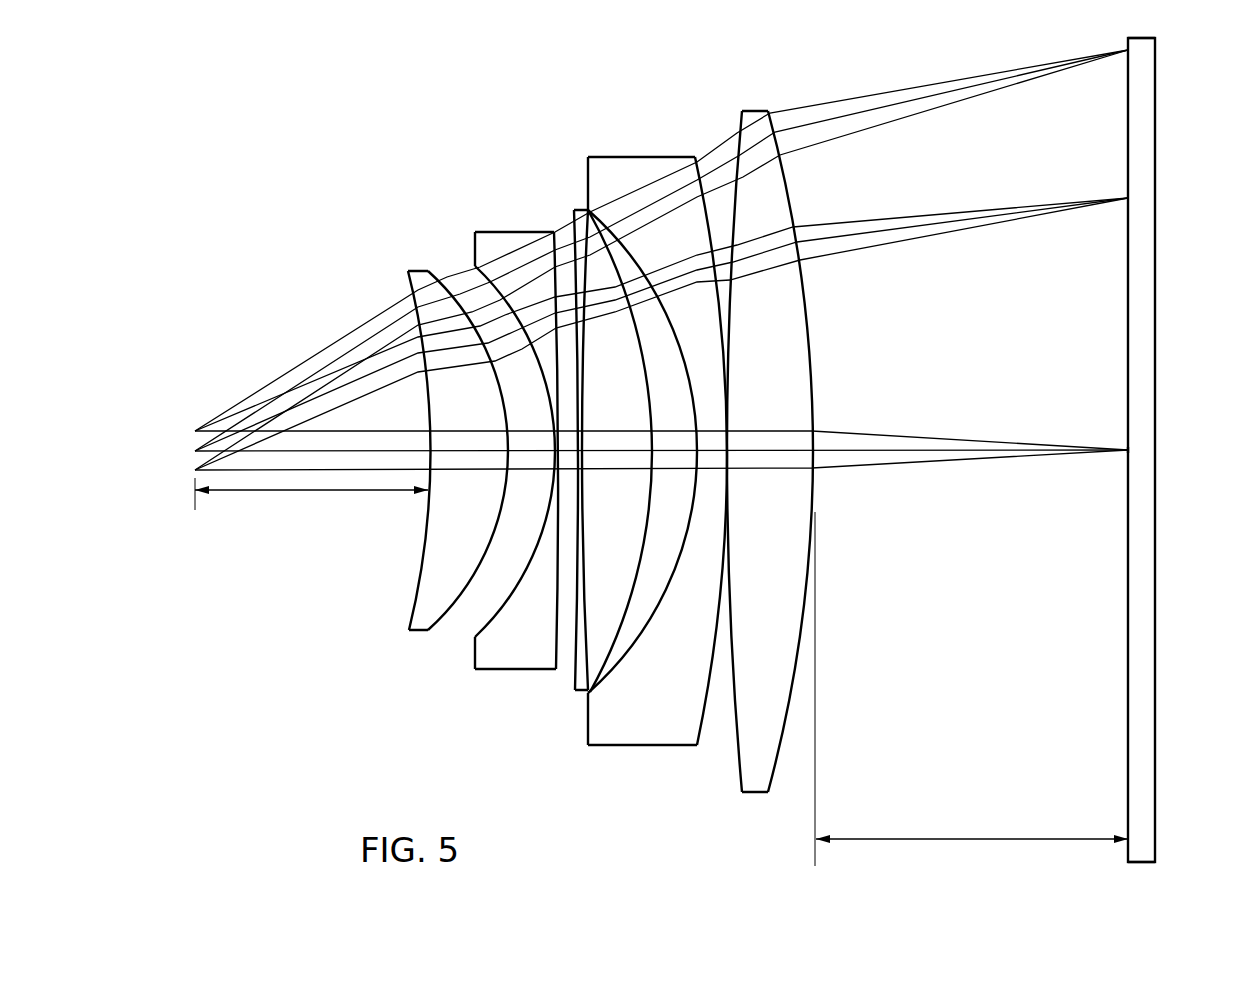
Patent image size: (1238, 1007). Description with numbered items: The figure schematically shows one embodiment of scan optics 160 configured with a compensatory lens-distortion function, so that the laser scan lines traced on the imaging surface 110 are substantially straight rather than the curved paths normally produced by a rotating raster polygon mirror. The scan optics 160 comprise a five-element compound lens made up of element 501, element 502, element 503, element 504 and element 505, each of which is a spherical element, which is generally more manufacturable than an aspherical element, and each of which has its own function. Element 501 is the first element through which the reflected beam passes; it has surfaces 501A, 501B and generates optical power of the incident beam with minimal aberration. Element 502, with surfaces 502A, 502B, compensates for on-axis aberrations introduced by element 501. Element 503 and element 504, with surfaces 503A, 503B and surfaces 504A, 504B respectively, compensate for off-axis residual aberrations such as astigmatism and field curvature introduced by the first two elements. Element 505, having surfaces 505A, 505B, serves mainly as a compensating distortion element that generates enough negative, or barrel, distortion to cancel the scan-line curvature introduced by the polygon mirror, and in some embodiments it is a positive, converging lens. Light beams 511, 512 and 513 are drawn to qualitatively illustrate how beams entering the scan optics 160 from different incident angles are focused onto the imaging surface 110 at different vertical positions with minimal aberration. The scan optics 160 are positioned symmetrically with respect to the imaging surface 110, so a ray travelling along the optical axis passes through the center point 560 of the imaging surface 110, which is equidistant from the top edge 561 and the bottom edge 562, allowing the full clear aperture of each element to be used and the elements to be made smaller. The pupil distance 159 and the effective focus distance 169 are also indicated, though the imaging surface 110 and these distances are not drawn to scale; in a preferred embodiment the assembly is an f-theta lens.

The imaging surface 110 is at (1128, 603).
The pupil distance 159 is at (313, 493).
The scan optics 160 is at (357, 169).
The effective focus distance 169 is at (868, 839).
The first element 501 is at (415, 469).
The surface of element 501 501A is at (414, 590).
The surface of element 501 501B is at (455, 596).
The second element 502 is at (496, 471).
The surface of element 502 502A is at (513, 590).
The surface of element 502 502B is at (559, 660).
The third element 503 is at (573, 489).
The surface of element 503 503A is at (575, 618).
The surface of element 503 503B is at (641, 557).
The fourth element 504 is at (657, 471).
The surface of element 504 504A is at (652, 617).
The surface of element 504 504B is at (705, 700).
The fifth element 505 is at (749, 479).
The surface of element 505 505A is at (739, 772).
The surface of element 505 505B is at (774, 763).
The light beam 511 is at (862, 466).
The light beam 512 is at (858, 250).
The light beam 513 is at (853, 135).
The center point 560 is at (1113, 434).
The top edge 561 is at (1142, 38).
The bottom edge 562 is at (1154, 862).